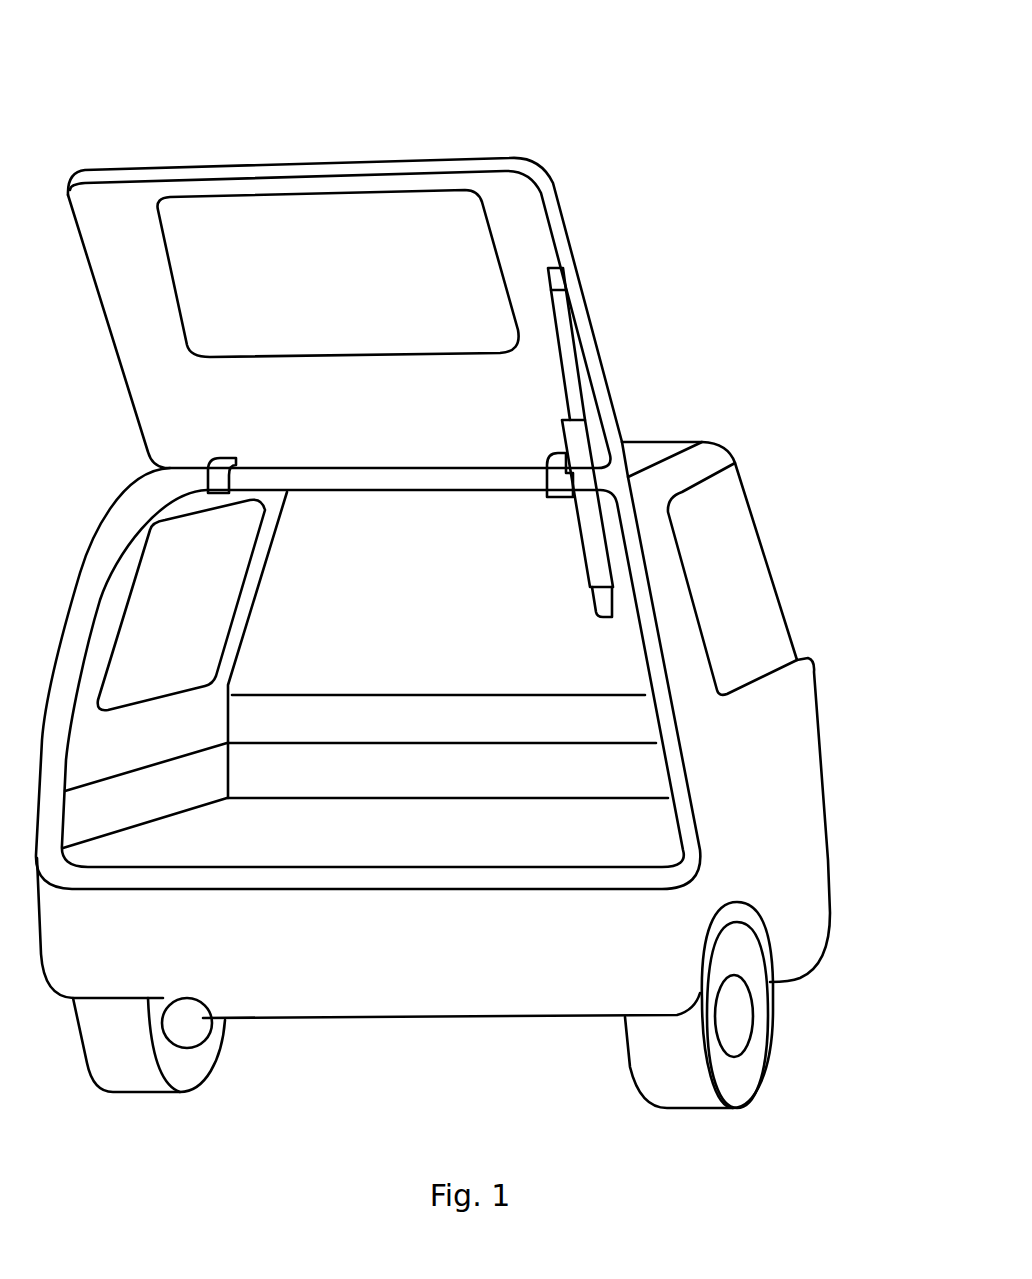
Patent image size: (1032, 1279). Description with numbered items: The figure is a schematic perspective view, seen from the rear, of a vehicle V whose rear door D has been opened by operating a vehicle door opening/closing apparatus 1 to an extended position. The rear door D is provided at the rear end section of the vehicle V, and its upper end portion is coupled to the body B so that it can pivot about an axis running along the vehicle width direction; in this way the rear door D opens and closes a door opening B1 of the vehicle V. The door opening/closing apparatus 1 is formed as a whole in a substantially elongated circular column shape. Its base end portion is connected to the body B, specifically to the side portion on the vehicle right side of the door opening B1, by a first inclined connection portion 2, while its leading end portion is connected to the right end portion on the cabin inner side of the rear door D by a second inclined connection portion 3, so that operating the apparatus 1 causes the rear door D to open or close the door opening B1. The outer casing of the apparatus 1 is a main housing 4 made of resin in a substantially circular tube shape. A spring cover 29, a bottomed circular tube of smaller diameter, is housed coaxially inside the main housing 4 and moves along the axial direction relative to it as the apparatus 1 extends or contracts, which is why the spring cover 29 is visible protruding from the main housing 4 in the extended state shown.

The door opening/closing apparatus 1 is at (557, 530).
The first inclined connection portion 2 is at (607, 610).
The second inclined connection portion 3 is at (565, 280).
The main housing 4 is at (603, 518).
The spring cover 29 is at (575, 353).
The body B is at (714, 760).
The door opening B1 is at (686, 829).
The rear door D is at (333, 162).
The vehicle V is at (768, 400).